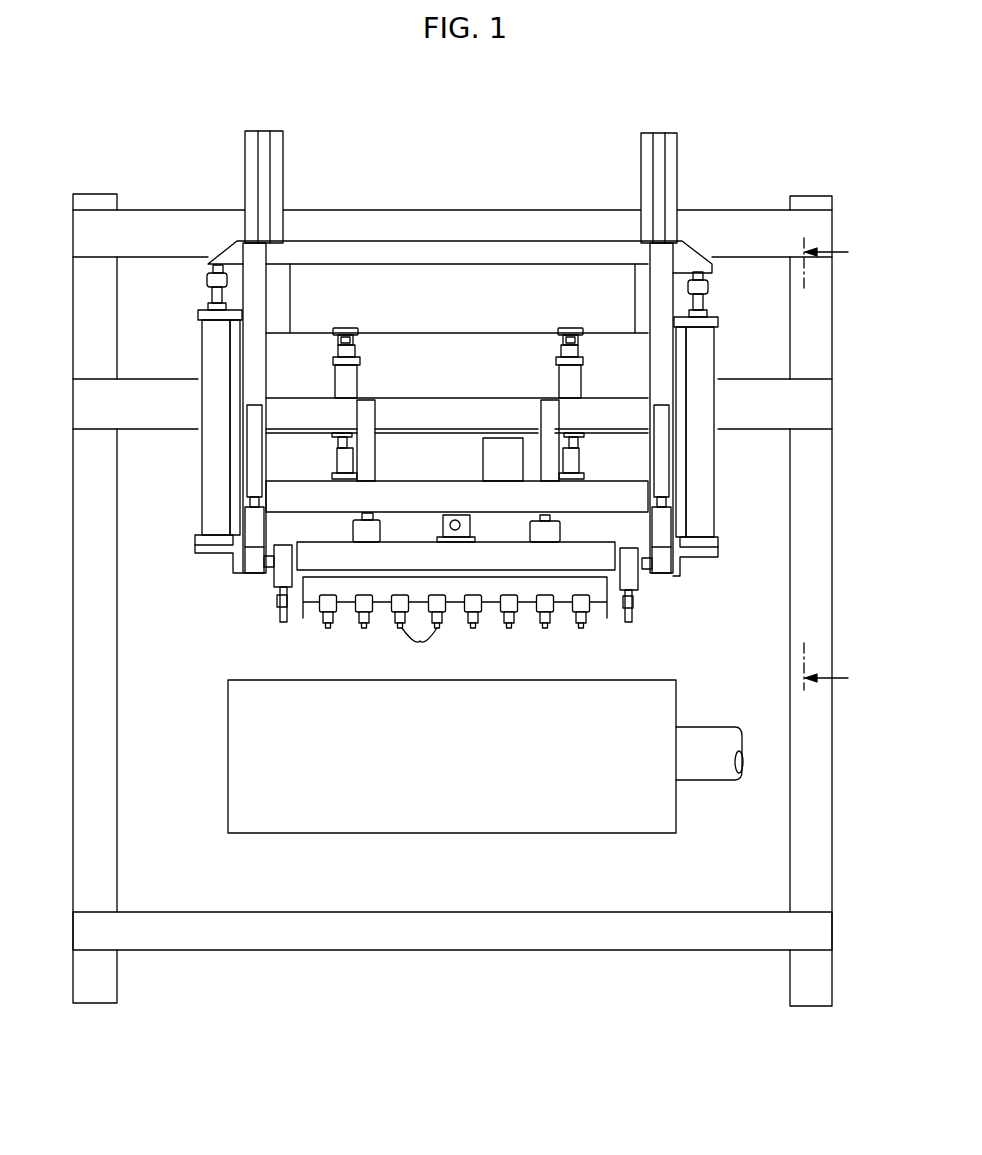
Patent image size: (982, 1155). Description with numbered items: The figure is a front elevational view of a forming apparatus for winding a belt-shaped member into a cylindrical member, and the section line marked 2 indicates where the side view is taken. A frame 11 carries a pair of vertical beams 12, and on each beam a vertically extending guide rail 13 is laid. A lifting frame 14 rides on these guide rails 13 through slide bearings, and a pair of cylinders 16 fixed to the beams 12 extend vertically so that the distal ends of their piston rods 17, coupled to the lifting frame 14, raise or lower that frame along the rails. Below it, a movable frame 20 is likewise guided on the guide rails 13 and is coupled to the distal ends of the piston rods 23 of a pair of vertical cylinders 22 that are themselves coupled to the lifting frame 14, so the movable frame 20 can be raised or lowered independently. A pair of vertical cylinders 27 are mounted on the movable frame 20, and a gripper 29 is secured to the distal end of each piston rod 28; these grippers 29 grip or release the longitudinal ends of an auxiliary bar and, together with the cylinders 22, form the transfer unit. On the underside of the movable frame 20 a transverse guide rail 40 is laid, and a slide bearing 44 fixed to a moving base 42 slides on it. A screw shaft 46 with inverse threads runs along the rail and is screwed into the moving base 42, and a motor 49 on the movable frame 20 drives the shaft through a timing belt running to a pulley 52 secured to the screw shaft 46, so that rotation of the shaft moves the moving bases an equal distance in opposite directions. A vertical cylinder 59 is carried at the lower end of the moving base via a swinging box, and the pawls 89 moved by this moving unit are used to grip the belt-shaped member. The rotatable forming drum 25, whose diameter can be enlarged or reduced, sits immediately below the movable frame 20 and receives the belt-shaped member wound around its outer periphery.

The frame 11 is at (738, 210).
The vertical beam 12 is at (285, 158).
The guide rail 13 is at (262, 131).
The lifting frame 14 is at (448, 250).
The cylinder 16 is at (204, 462).
The piston rod 17 is at (212, 298).
The movable frame 20 is at (628, 490).
The vertical cylinder 22 is at (348, 382).
The piston rod 23 is at (339, 461).
The forming drum 25 is at (668, 688).
The vertical cylinder 27 is at (262, 420).
The piston rod 28 is at (245, 513).
The gripper 29 is at (250, 568).
The guide rail 40 is at (365, 514).
The moving base 42 is at (494, 566).
The slide bearing 44 is at (556, 537).
The screw shaft 46 is at (437, 517).
The motor 49 is at (483, 455).
The pulley 52 is at (545, 621).
The vertical cylinder 59 is at (272, 582).
The pawl 89 is at (420, 651).
The section line 2- 2 is at (835, 466).